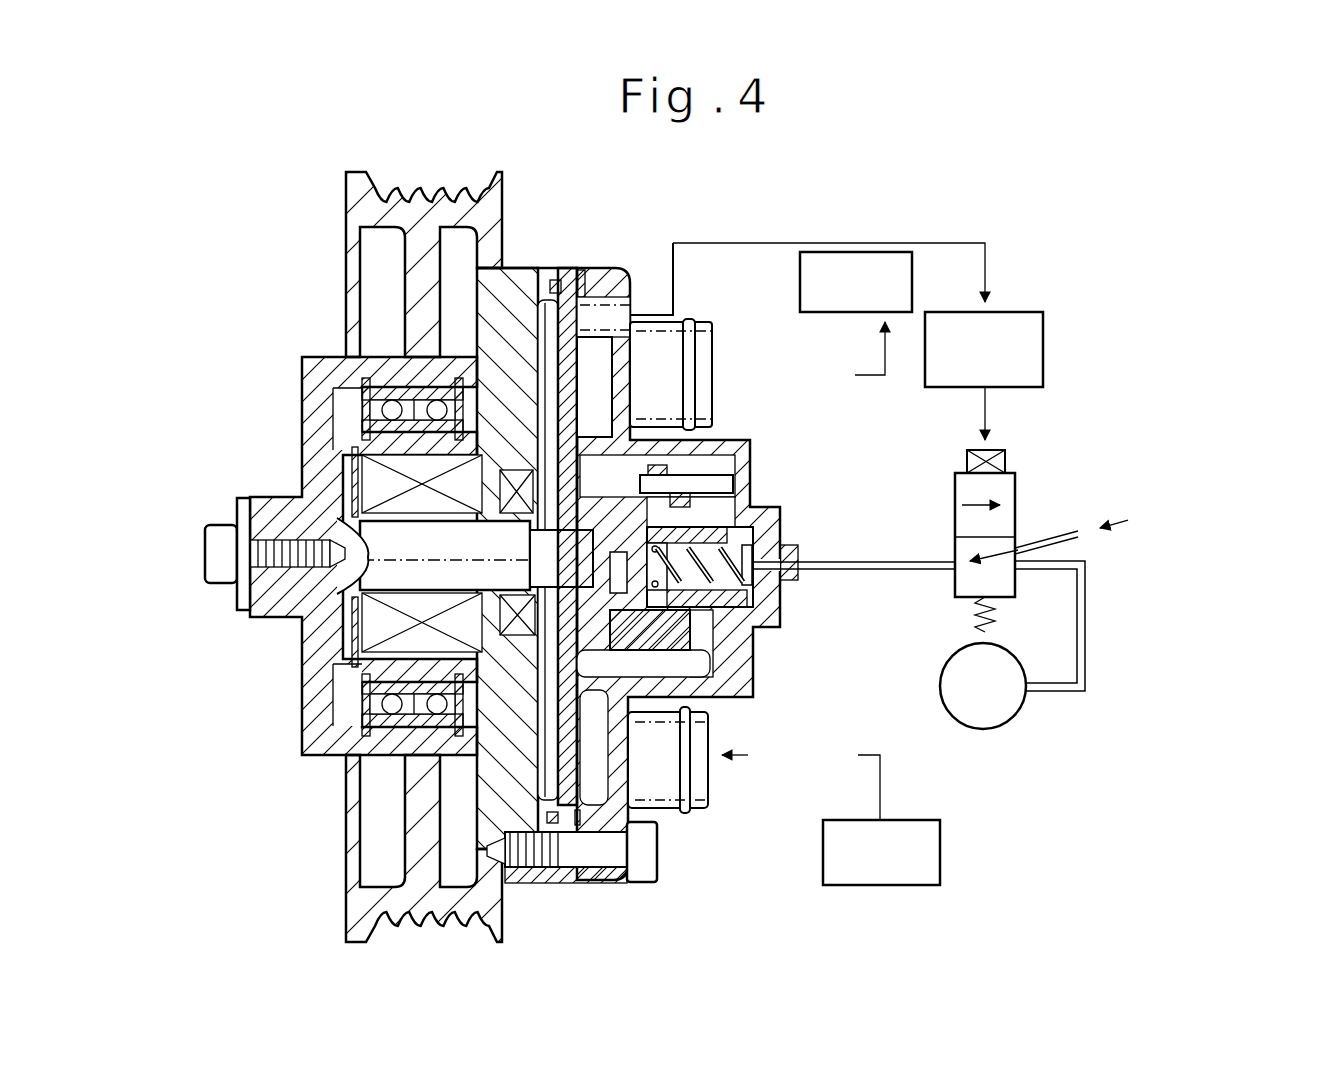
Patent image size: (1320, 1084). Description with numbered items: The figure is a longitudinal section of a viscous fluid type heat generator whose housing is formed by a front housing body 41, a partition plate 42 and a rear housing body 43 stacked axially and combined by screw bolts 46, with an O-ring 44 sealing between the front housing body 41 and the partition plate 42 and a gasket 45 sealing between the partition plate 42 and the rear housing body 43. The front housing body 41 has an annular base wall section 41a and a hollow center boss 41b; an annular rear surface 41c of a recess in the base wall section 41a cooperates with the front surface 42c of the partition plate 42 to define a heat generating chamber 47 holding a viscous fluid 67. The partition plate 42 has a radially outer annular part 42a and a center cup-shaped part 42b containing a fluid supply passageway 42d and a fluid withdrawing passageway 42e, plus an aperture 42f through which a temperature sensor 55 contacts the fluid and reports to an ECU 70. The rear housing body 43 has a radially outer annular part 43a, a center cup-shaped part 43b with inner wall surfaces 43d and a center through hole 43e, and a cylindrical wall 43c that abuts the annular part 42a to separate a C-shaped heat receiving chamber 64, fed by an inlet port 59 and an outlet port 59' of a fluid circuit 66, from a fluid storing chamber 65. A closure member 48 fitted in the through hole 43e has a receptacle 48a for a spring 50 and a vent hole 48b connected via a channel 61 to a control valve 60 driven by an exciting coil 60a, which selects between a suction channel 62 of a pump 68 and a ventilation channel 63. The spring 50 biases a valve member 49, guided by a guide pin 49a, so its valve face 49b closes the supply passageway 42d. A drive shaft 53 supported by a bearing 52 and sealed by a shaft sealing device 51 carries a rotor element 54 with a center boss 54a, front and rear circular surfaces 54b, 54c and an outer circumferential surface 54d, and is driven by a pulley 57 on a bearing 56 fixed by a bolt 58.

The front housing body 41 is at (527, 287).
The annular base wall section 41a is at (490, 732).
The center boss 41b is at (390, 662).
The annular rear surface 41c is at (520, 760).
The partition plate 42 is at (572, 272).
The radially outer annular part 42a is at (537, 343).
The center cup-shaped part 42b is at (733, 685).
The front surface 42c is at (598, 767).
The fluid supply passageway 42d is at (585, 590).
The fluid withdrawing passageway 42e is at (680, 450).
The aperture 42f is at (487, 262).
The rear housing body 43 is at (617, 277).
The radially outer annular part 43a is at (622, 385).
The center cup-shaped part 43b is at (745, 452).
The cylindrical wall 43c is at (633, 720).
The inner wall surfaces 43d is at (705, 380).
The center through hole 43e is at (770, 525).
The O-ring 44 is at (566, 272).
The gasket 45 is at (582, 282).
The screw bolts 46 is at (642, 867).
The heat generating chamber 47 is at (555, 280).
The closure member 48 is at (752, 525).
The receptacle 48a is at (750, 540).
The vent hole 48b is at (775, 560).
The valve member 49 is at (730, 655).
The guide pin 49a is at (730, 480).
The valve face 49b is at (700, 664).
The spring 50 is at (620, 583).
The shaft sealing device 51 is at (517, 510).
The bearing 52 is at (375, 485).
The drive shaft 53 is at (287, 525).
The rotor element 54 is at (537, 303).
The center boss 54a is at (578, 546).
The front circular surface 54b is at (493, 840).
The rear circular surface 54c is at (600, 750).
The outer circumferential surface 54d is at (550, 735).
The temperature sensor 55 is at (627, 300).
The bearing 56 is at (390, 383).
The pulley 57 is at (346, 218).
The bolt 58 is at (222, 523).
The inlet port 59 is at (707, 771).
The outlet port 59' is at (703, 355).
The control valve 60 is at (1015, 490).
The exciting coil 60a is at (1005, 458).
The channel 61 is at (910, 563).
The suction channel 62 is at (1083, 645).
The ventilation channel 63 is at (1073, 537).
The heat receiving chamber 64 is at (600, 772).
The fluid storing chamber 65 is at (703, 667).
The fluid circuit 66 is at (912, 278).
The viscous fluid 67 is at (683, 628).
The pump 68 is at (1013, 720).
The electrical control unit 70 is at (1043, 350).